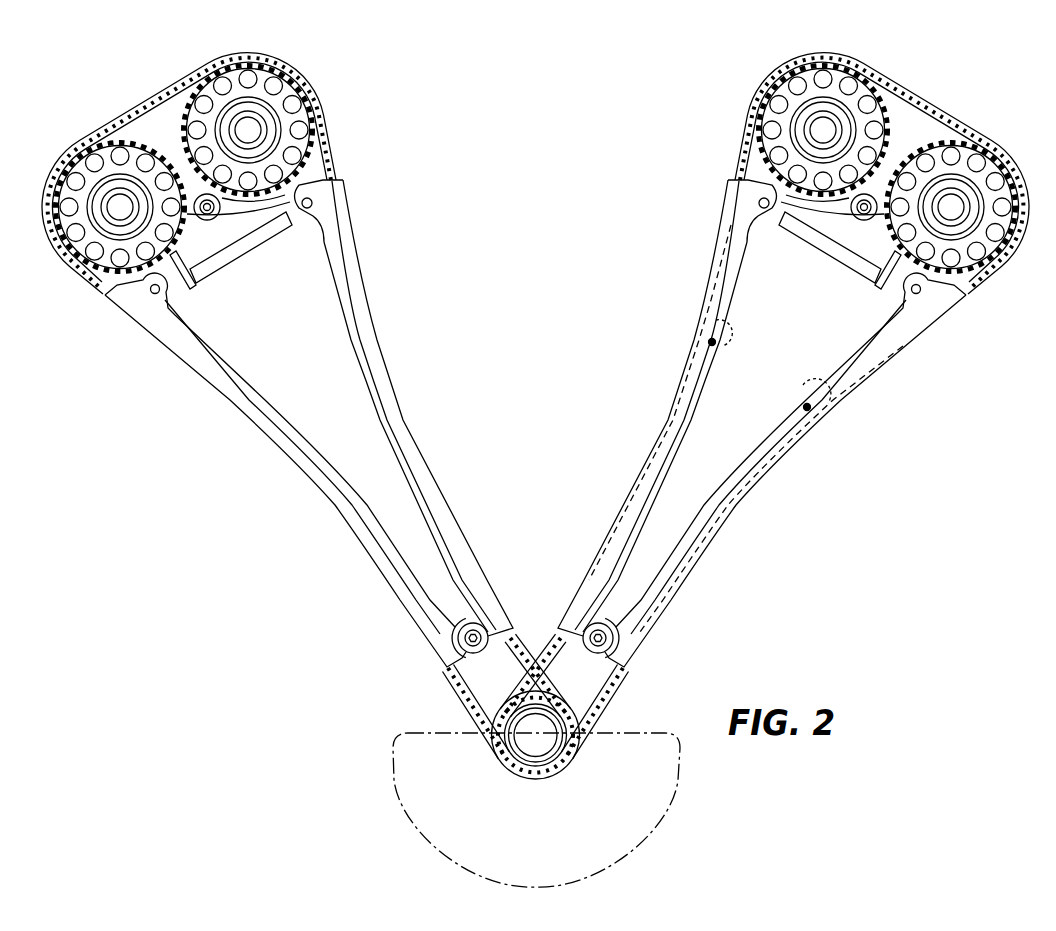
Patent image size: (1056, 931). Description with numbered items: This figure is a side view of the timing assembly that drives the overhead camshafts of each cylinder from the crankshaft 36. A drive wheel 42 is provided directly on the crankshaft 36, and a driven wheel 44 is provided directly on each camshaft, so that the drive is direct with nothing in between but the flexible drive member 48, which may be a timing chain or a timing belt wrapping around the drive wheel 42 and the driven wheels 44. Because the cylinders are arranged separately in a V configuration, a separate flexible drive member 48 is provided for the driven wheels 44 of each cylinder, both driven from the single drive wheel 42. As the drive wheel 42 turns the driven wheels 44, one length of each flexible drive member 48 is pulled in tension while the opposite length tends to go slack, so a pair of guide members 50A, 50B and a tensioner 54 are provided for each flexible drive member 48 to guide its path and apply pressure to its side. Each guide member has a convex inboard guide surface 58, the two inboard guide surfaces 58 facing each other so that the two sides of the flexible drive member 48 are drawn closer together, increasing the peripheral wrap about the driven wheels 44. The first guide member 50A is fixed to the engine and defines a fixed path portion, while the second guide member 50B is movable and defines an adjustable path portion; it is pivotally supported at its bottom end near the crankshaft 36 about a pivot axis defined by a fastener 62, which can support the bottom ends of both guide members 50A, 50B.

The crankshaft 36 is at (397, 800).
The drive wheel 42 is at (538, 750).
The driven wheel 44 is at (177, 118).
The flexible drive member 48 is at (333, 101).
The first guide member 50A is at (420, 452).
The second guide member 50B is at (331, 505).
The tensioner 54 is at (222, 243).
The inboard guide surface 58 is at (714, 343).
The fastener 62 is at (457, 629).